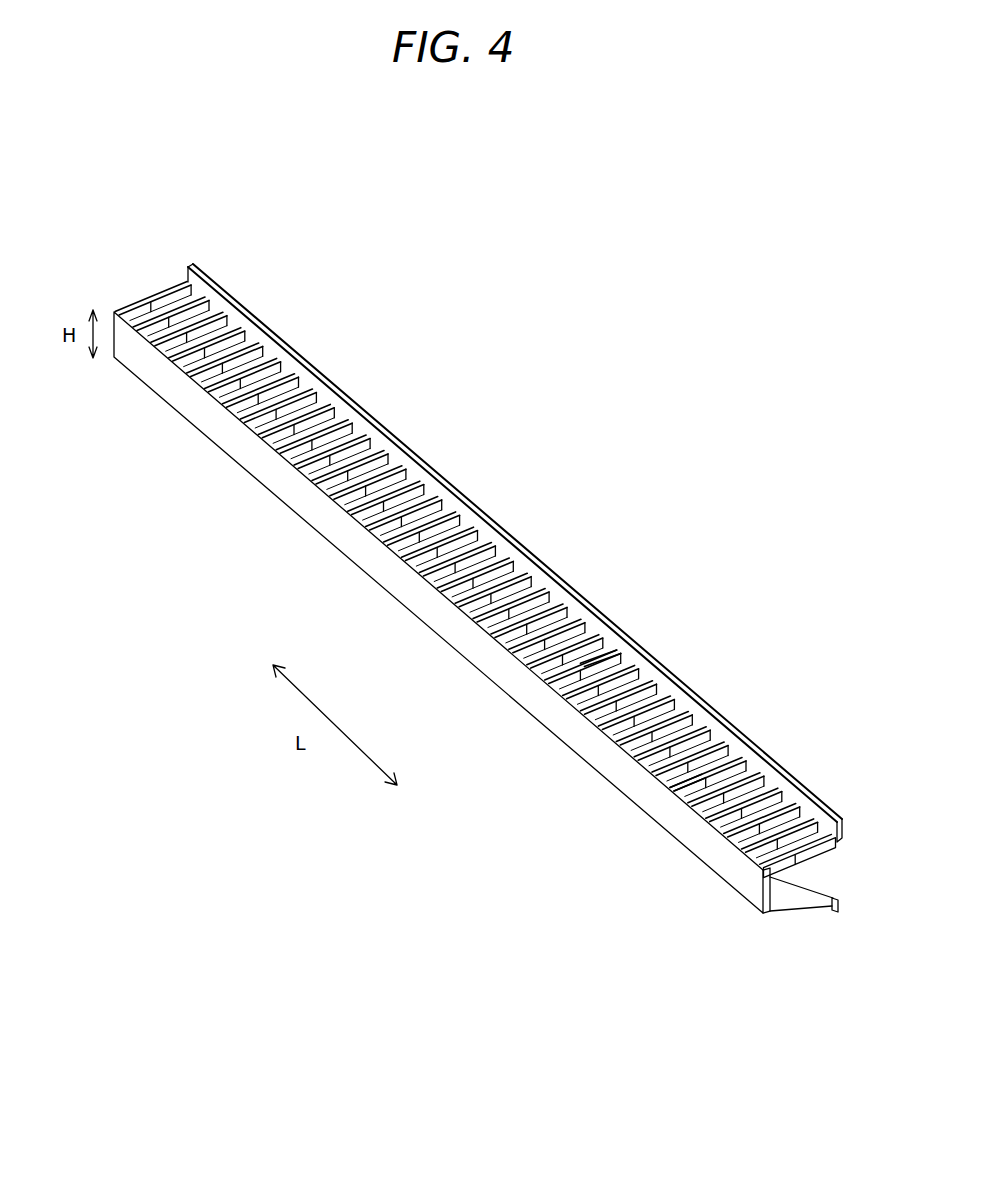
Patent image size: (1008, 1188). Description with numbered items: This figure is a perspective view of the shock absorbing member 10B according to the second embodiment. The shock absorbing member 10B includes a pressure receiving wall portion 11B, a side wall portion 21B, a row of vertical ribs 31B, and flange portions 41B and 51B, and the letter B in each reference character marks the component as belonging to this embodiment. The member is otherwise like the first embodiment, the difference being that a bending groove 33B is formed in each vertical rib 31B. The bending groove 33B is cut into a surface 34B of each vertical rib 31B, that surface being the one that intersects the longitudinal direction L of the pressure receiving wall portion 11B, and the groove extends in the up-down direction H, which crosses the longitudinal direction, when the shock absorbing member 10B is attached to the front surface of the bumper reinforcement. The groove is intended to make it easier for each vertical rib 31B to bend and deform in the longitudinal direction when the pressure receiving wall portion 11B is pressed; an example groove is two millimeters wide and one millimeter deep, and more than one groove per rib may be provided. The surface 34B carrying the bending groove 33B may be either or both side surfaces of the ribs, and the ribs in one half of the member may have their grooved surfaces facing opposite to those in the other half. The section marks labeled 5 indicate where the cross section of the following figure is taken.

The shock absorbing member 10B is at (470, 401).
The pressure receiving wall portion 11B is at (590, 752).
The side wall portion 21B is at (793, 912).
The flange portion 41B is at (830, 917).
The flange portion 51B is at (828, 797).
The vertical rib 31B is at (475, 580).
The bending groove 33B is at (743, 753).
The surface 34B is at (605, 662).
The section line of FIG. 5 is at (503, 523).